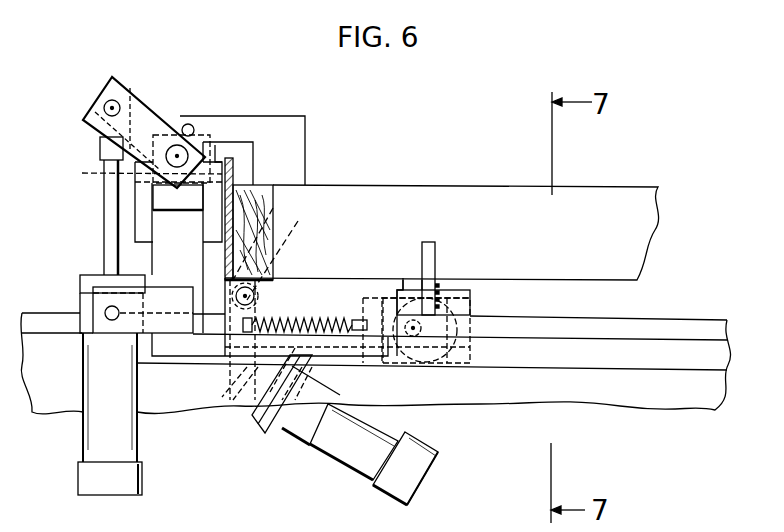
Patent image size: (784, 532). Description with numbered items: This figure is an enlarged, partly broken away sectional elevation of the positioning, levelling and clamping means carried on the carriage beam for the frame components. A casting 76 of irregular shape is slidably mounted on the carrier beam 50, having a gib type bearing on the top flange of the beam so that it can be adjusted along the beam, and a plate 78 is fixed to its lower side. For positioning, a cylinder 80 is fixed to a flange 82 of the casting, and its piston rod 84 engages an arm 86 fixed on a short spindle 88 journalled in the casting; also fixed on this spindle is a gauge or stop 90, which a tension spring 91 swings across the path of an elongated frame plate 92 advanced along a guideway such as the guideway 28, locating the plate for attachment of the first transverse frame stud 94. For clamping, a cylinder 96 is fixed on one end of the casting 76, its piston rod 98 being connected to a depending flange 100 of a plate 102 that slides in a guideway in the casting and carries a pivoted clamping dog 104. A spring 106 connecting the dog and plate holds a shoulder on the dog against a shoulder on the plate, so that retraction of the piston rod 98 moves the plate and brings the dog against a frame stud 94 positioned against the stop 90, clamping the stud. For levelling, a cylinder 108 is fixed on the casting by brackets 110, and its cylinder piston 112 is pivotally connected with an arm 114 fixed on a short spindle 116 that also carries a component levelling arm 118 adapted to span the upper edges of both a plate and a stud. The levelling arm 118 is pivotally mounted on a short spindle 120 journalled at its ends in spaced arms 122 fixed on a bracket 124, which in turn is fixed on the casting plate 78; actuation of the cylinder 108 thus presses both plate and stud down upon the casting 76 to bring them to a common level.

The guideway 28 is at (233, 158).
The carrier beam 50 is at (643, 320).
The casting 76 is at (348, 278).
The plate 78 is at (180, 355).
The cylinder 80 is at (333, 453).
The flange 82 is at (258, 430).
The piston rod 84 is at (247, 407).
The arm 86 is at (230, 382).
The short spindle 88 is at (257, 299).
The gauge or stop 90 is at (273, 213).
The tension spring 91 is at (322, 317).
The plate 92 is at (274, 202).
The frame stud 94 is at (477, 187).
The cylinder 96 is at (440, 365).
The piston rod 98 is at (405, 363).
The depending flange 100 is at (403, 327).
The plate 102 is at (412, 280).
The clamping dog 104 is at (437, 248).
The spring 106 is at (438, 283).
The cylinder 108 is at (87, 437).
The brackets 110 is at (176, 290).
The cylinder piston 112 is at (106, 253).
The arm 114 is at (83, 120).
The short spindle 116 is at (177, 145).
The component levelling arm 118 is at (267, 116).
The short spindle 120 is at (137, 174).
The spaced arms 122 is at (206, 237).
The bracket 124 is at (153, 254).